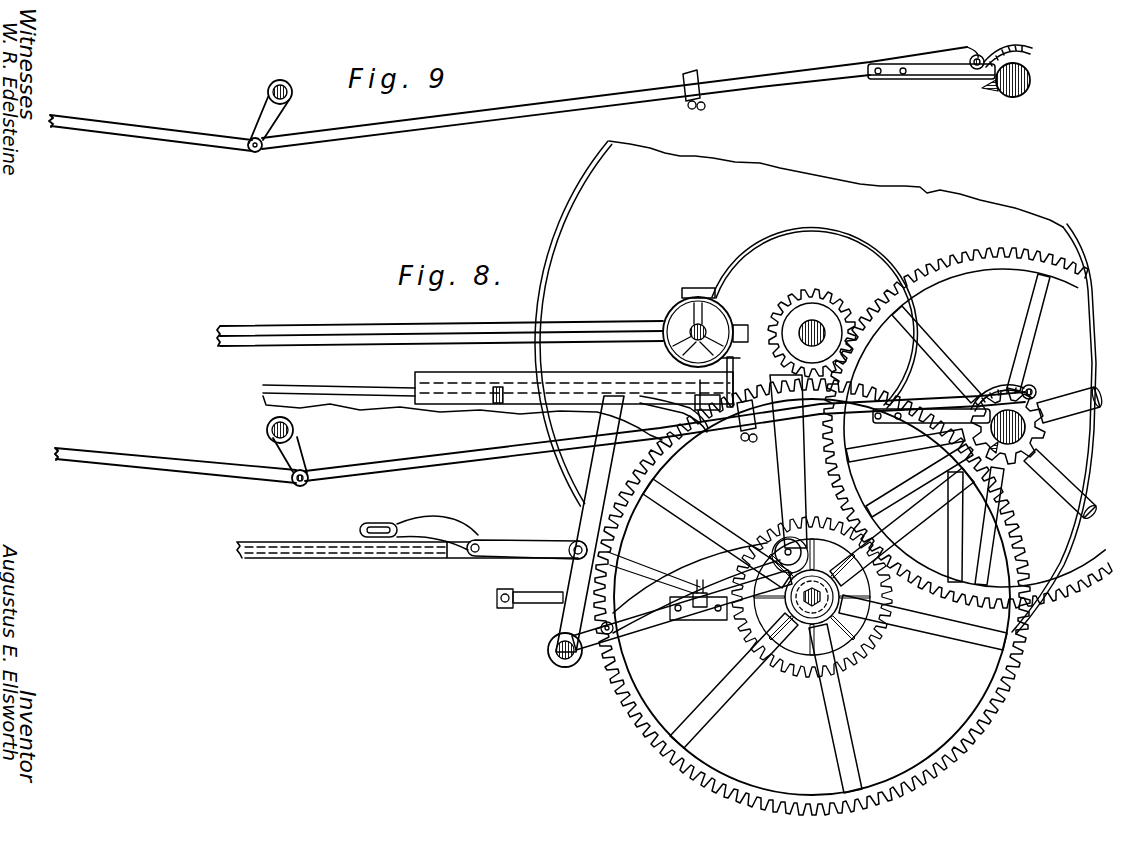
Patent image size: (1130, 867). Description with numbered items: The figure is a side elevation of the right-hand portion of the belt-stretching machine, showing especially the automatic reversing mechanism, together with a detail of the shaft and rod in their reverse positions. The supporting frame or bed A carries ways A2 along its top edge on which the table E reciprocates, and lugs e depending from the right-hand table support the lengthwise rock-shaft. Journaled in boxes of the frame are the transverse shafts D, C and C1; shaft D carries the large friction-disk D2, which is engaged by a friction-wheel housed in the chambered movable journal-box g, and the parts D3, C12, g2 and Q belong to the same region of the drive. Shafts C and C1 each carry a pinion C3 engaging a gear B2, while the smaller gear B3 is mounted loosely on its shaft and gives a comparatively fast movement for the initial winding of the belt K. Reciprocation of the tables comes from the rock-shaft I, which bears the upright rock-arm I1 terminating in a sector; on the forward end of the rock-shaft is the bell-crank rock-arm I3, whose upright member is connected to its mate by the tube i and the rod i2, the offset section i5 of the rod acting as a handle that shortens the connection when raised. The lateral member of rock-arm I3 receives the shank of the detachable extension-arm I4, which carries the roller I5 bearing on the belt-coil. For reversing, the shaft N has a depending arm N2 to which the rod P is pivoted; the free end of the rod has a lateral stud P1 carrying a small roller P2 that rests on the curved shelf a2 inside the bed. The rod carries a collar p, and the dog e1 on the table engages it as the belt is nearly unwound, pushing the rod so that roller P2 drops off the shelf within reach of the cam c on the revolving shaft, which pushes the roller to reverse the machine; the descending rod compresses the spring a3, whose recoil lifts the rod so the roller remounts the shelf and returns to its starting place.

In FIG. 9, the rod P is at (217, 144).
In FIG. 8, the rod P is at (211, 470).
In FIG. 9, the shaft N is at (293, 91).
In FIG. 8, the shaft N is at (294, 428).
In FIG. 9, the depending arm N2 is at (283, 121).
In FIG. 8, the depending arm N2 is at (303, 446).
In FIG. 9, the collar p is at (698, 80).
In FIG. 8, the collar p is at (739, 430).
In FIG. 9, the spring a3 is at (935, 72).
In FIG. 8, the spring a3 is at (891, 425).
In FIG. 9, the roller P2 is at (977, 55).
In FIG. 8, the roller P2 is at (1038, 394).
In FIG. 9, the lateral stud P1 is at (968, 76).
In FIG. 8, the lateral stud P1 is at (1036, 389).
In FIG. 9, the curved shelf a2 is at (1010, 47).
In FIG. 8, the curved shelf a2 is at (1006, 408).
In FIG. 9, the shaft C1 is at (1031, 82).
In FIG. 8, the shaft C1 is at (1017, 429).
In FIG. 9, the cam c is at (990, 92).
In FIG. 8, the cam c is at (994, 447).
In FIG. 8, the friction-disk D2 is at (815, 387).
In FIG. 8, the shaft D is at (814, 318).
In FIG. 8, the pinion D3 is at (818, 300).
In FIG. 8, the gear wheel C12 is at (1010, 263).
In FIG. 8, the belt K is at (952, 527).
In FIG. 8, the gear B2 is at (1015, 658).
In FIG. 8, the smaller gear B3 is at (866, 655).
In FIG. 8, the sheave g2 is at (672, 312).
In FIG. 8, the movable journal-box g is at (701, 290).
In FIG. 8, the shaft Q is at (440, 325).
In FIG. 8, the table E is at (597, 381).
In FIG. 8, the ways A2 is at (357, 387).
In FIG. 8, the supporting frame A is at (491, 410).
In FIG. 8, the dog e1 is at (737, 395).
In FIG. 8, the shaft C is at (1008, 427).
In FIG. 8, the pinion C3 is at (1030, 466).
In FIG. 8, the rock-arm I1 is at (584, 505).
In FIG. 8, the rock-shaft I is at (547, 650).
In FIG. 8, the rock-arm I3 is at (609, 648).
In FIG. 8, the extension-arm I4 is at (648, 614).
In FIG. 8, the roller I5 is at (563, 616).
In FIG. 8, the tube i is at (333, 543).
In FIG. 8, the rod i2 is at (515, 540).
In FIG. 8, the section i5 is at (452, 520).
In FIG. 8, the lug e is at (698, 600).